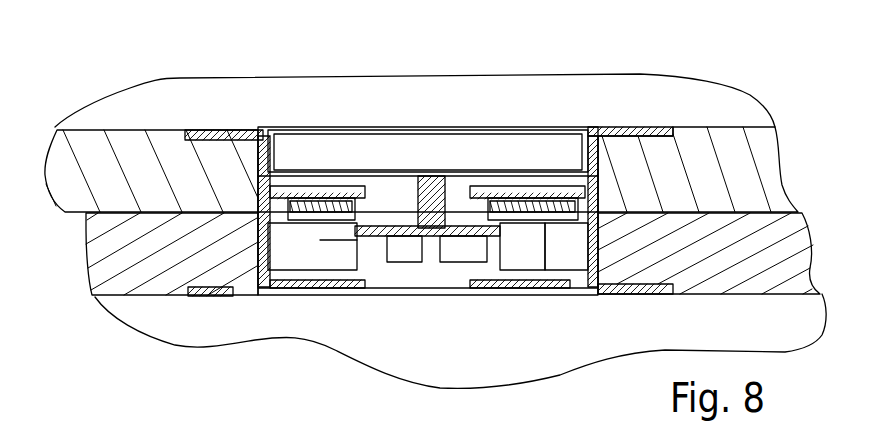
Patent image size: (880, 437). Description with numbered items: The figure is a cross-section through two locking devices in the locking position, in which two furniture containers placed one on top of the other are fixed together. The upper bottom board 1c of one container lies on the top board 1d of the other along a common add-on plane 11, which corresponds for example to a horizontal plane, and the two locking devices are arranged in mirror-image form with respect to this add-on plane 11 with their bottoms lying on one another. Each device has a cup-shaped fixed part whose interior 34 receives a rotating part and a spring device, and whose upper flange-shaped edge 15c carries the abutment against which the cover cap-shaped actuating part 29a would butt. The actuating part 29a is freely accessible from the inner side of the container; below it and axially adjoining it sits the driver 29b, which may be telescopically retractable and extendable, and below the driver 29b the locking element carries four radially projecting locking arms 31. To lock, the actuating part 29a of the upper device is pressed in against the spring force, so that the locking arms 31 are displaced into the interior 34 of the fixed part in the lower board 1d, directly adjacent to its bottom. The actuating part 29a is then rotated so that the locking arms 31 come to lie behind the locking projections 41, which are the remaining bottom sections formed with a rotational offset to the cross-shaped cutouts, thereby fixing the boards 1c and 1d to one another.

The upper bottom board 1c is at (735, 145).
The top board 1d is at (740, 226).
The add-on plane 11 is at (152, 203).
The flange-shaped edge 15c is at (655, 132).
The cover cap-shaped actuating part 29a is at (327, 193).
The driver 29b is at (370, 210).
The locking arms 31 is at (308, 232).
The interior 34 is at (572, 242).
The locking projections 41 is at (332, 212).